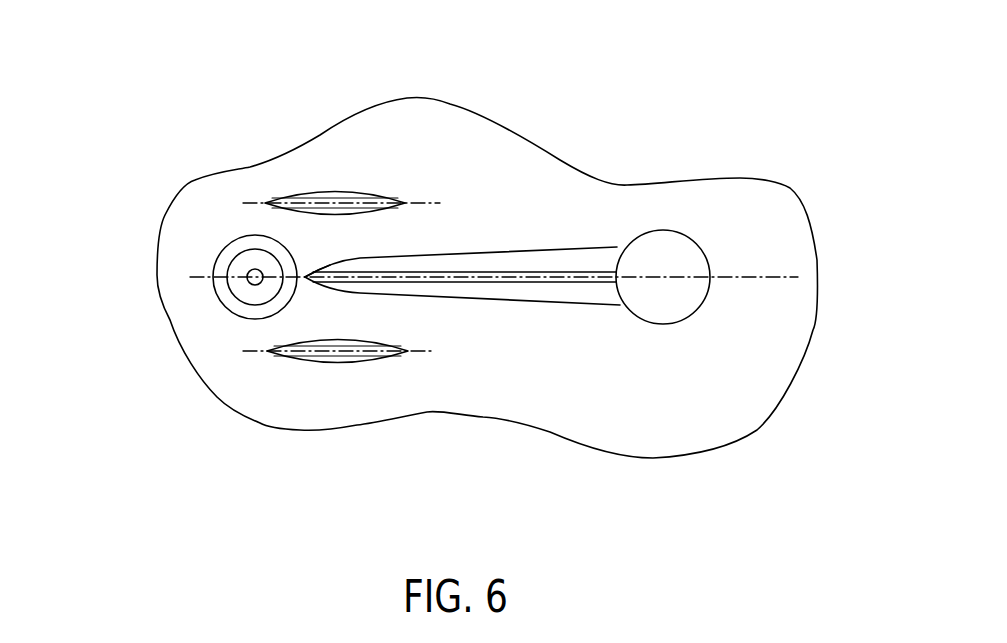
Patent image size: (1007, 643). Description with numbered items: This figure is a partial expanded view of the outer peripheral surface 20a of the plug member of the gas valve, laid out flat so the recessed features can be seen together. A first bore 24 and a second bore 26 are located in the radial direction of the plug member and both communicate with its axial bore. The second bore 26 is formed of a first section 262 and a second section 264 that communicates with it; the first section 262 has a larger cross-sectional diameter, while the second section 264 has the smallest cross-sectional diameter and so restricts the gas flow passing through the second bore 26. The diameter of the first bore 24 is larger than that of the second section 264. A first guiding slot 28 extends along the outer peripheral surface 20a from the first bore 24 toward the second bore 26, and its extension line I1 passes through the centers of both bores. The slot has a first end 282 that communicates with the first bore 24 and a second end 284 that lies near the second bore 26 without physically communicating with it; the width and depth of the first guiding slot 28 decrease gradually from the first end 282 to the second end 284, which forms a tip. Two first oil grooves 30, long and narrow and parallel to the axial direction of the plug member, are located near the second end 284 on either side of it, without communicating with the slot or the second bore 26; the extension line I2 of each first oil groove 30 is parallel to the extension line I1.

The outer peripheral surface 20a is at (725, 404).
The first bore 24 is at (698, 302).
The second bore 26 is at (64, 184).
The first section 262 is at (228, 292).
The second section 264 is at (247, 273).
The first guiding slot 28 is at (548, 247).
The first end 282 is at (613, 248).
The second end 284 is at (305, 276).
The first oil groove 30 is at (337, 192).
The extension line of the first guiding slot I1 is at (747, 277).
The extension line of the first oil groove I2 is at (427, 207).